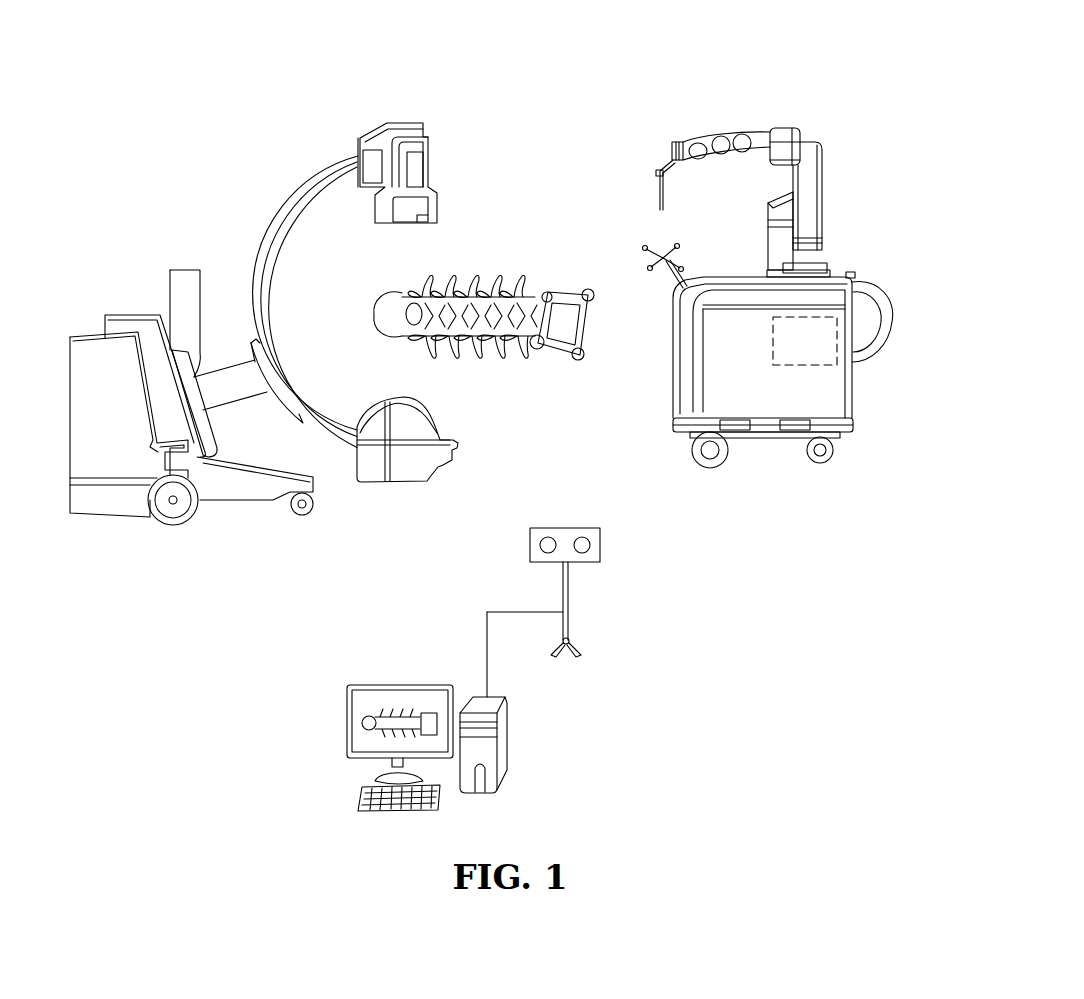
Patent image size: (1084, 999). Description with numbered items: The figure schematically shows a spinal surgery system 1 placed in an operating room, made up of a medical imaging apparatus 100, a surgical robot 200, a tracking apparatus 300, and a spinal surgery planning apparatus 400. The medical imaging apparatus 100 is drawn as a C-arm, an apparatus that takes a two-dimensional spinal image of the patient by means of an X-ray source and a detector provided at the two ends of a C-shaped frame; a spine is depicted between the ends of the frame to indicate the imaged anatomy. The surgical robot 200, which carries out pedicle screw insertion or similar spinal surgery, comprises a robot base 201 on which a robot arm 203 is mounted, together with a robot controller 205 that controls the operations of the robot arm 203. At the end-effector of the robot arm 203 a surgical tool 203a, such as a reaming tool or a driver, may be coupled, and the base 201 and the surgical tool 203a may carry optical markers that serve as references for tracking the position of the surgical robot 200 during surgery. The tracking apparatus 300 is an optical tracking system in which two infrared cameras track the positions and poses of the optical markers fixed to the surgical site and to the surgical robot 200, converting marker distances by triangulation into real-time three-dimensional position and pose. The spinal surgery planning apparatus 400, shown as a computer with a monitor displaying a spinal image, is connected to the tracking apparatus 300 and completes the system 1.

The spinal surgery system 1 is at (512, 31).
The medical imaging apparatus 100 is at (308, 186).
The surgical robot 200 is at (792, 116).
The robot base 201 is at (825, 290).
The robot arm 203 is at (728, 132).
The surgical tool 203a is at (655, 178).
The robot controller 205 is at (838, 364).
The tracking apparatus 300 is at (602, 547).
The spinal surgery planning apparatus 400 is at (510, 742).